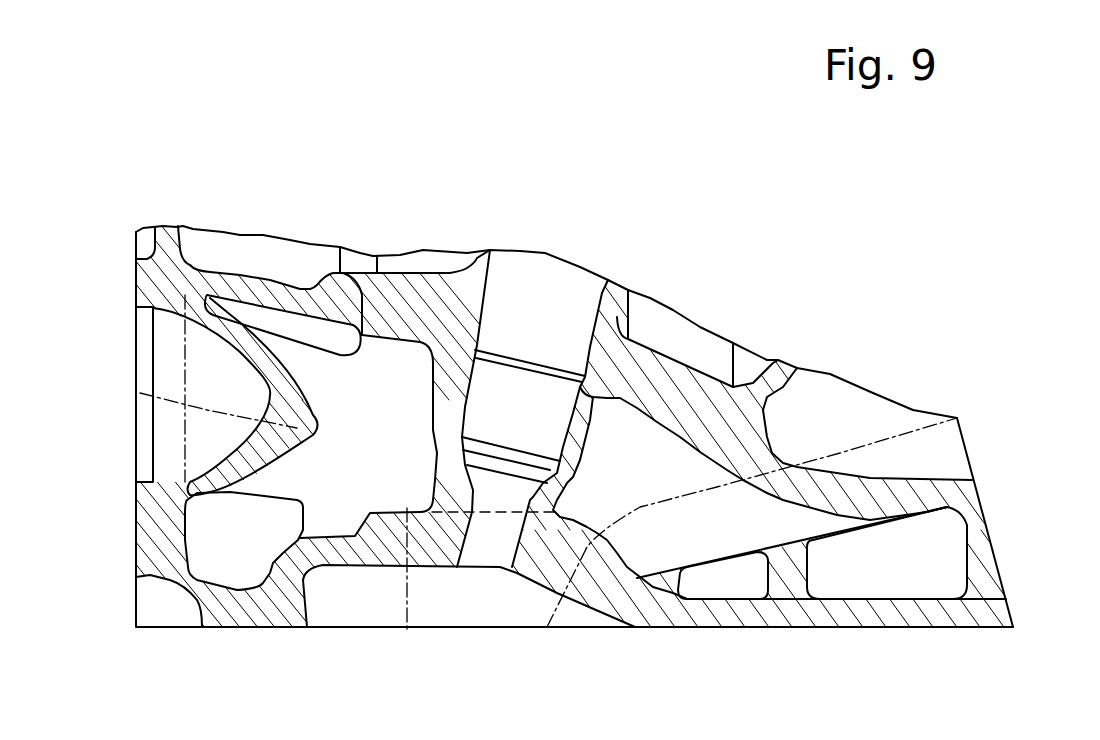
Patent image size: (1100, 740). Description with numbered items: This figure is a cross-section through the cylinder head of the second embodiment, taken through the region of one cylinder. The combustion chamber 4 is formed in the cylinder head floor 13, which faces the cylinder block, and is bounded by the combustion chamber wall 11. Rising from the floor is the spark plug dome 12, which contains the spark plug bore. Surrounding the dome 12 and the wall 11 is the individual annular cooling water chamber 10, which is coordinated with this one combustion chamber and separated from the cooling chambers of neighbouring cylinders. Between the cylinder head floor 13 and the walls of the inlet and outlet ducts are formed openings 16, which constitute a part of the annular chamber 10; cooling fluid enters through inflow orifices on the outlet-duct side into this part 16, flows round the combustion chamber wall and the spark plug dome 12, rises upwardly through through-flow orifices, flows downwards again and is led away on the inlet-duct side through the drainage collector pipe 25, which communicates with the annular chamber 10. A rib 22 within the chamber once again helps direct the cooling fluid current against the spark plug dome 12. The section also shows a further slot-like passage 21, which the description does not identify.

The intake channel slot 21 is at (260, 317).
The rib 22 is at (287, 425).
The spark plug dome 12 is at (455, 392).
The combustion chamber wall 11 is at (383, 553).
The combustion chamber 4 is at (430, 547).
The annular cooling fluid chamber 10 is at (607, 433).
The drainage collector pipe 25 is at (947, 533).
The opening 16 is at (745, 587).
The cylinder head floor 13 is at (840, 613).